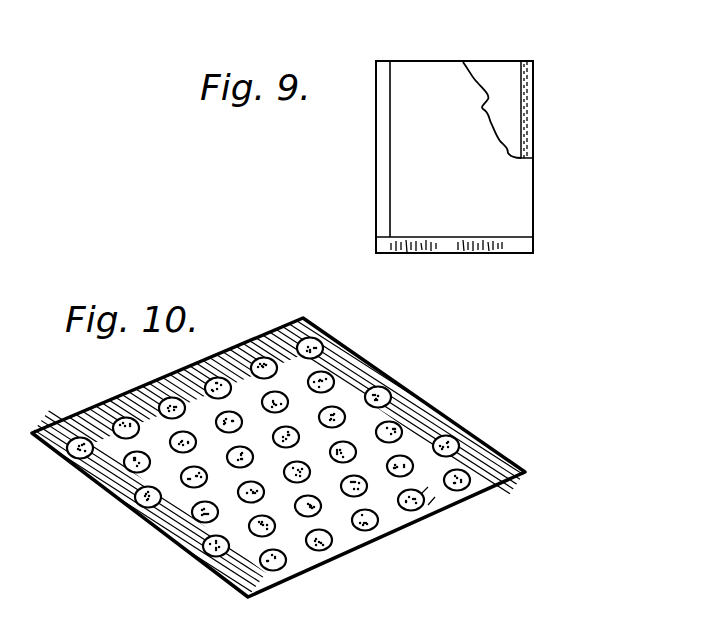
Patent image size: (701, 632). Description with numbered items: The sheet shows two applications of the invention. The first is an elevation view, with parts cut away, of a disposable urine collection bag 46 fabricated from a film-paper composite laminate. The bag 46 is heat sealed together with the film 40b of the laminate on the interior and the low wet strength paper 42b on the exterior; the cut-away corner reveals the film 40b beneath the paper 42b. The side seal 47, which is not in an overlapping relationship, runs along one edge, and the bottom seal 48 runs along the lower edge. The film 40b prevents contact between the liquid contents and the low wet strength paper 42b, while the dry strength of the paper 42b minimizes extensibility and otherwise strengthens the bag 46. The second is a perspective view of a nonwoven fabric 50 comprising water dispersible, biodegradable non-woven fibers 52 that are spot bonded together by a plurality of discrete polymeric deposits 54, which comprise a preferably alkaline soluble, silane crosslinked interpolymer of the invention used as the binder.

In FIG. 9, the film 40b is at (521, 70).
In FIG. 9, the low wet strength paper 42b is at (532, 127).
In FIG. 9, the bag 46 is at (461, 181).
In FIG. 9, the side seal 47 is at (377, 147).
In FIG. 9, the bottom seal 48 is at (482, 253).
In FIG. 10, the nonwoven fabric 50 is at (327, 381).
In FIG. 10, the non-woven fibers 52 is at (487, 449).
In FIG. 10, the discrete polymeric deposits 54 is at (367, 532).